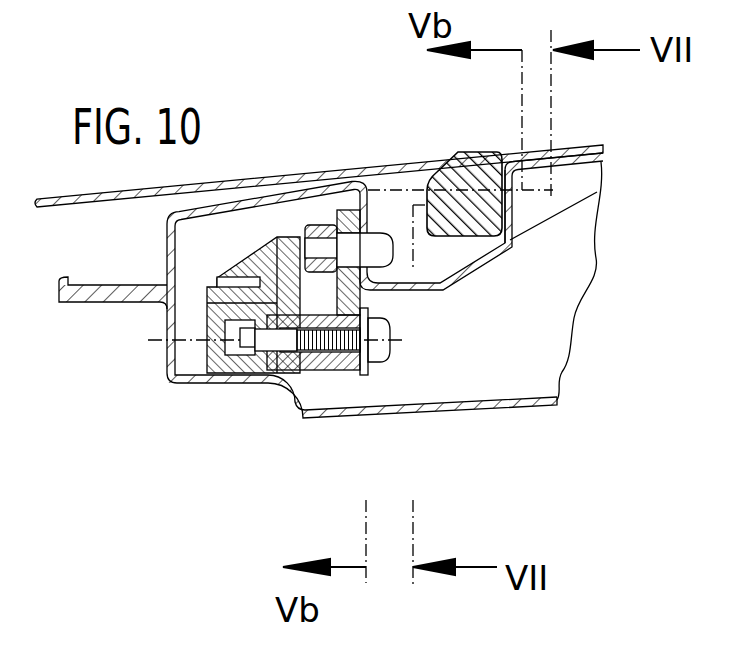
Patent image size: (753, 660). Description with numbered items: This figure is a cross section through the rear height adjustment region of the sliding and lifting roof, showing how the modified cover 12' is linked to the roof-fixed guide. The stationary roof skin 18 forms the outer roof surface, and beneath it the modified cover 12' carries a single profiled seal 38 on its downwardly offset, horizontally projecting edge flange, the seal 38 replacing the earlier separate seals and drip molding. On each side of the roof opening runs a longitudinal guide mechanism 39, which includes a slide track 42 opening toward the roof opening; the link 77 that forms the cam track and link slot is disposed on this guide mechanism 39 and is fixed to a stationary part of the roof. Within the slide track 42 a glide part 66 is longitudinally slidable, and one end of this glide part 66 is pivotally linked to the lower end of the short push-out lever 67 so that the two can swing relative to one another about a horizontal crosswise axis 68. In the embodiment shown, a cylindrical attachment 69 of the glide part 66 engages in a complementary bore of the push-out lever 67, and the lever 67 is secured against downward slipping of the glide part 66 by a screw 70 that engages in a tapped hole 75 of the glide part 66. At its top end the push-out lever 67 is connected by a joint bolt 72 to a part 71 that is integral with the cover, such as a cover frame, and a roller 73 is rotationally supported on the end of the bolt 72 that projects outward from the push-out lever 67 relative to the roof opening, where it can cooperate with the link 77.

The stationary roof skin 18 is at (52, 200).
The modified cover 12' is at (556, 165).
The profiled seal 38 is at (466, 153).
The part integral with the cover 71 is at (485, 259).
The push-out lever 67 is at (490, 326).
The link 77 is at (285, 232).
The roller 73 is at (318, 225).
The joint bolt 72 is at (350, 210).
The horizontal crosswise axis 68 is at (150, 342).
The longitudinal guide mechanism 39 is at (228, 378).
The glide part 66 is at (255, 388).
The tapped hole 75 is at (284, 394).
The slide track 42 is at (330, 368).
The cylindrical attachment 69 is at (348, 372).
The screw 70 is at (390, 365).